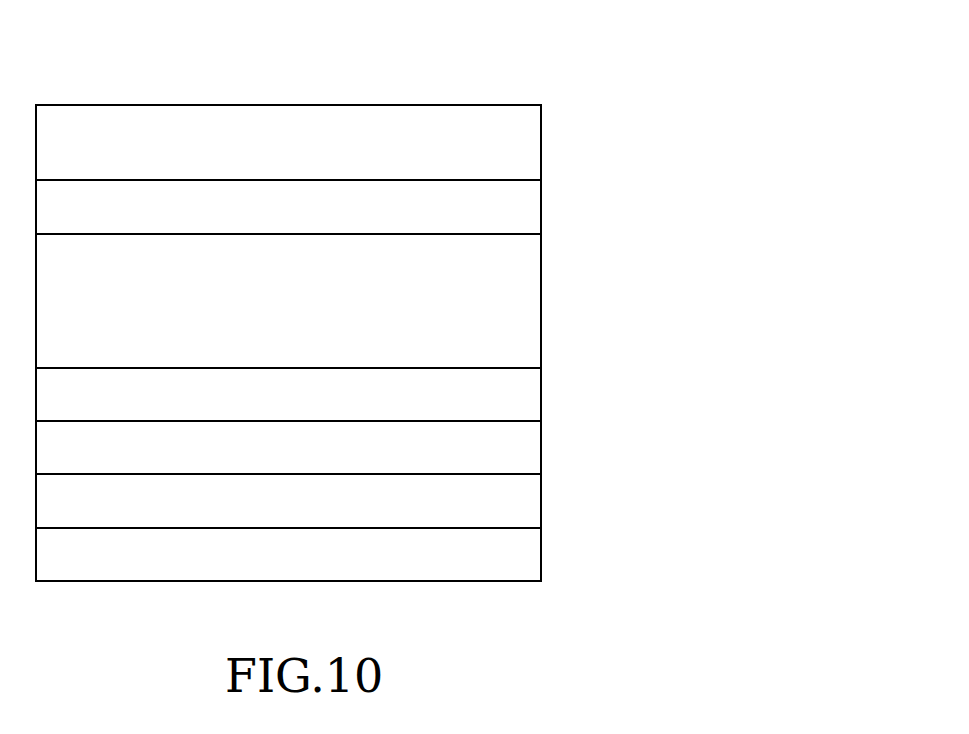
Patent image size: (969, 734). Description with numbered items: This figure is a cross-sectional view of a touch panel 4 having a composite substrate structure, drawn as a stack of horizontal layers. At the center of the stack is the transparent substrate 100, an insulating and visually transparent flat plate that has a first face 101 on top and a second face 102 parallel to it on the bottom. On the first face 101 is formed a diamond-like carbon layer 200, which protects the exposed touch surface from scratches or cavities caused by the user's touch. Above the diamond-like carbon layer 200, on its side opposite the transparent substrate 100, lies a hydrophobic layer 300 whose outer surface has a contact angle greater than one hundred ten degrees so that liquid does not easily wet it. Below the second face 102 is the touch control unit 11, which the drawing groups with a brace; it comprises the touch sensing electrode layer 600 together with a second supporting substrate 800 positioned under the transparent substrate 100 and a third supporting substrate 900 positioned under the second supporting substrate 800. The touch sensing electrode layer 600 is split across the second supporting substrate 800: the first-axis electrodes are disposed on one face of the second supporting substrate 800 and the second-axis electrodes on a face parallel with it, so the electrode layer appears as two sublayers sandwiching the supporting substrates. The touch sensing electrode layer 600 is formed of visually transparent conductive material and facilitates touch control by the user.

The touch panel 4 is at (558, 65).
The hydrophobic layer 300 is at (527, 143).
The diamond-like carbon layer 200 is at (527, 197).
The first face 101 is at (518, 233).
The transparent substrate 100 is at (527, 305).
The second face 102 is at (520, 369).
The touch sensing electrode layer 600 is at (533, 398).
The second supporting substrate 800 is at (530, 455).
The third supporting substrate 900 is at (530, 502).
The touch control unit 11 is at (632, 413).